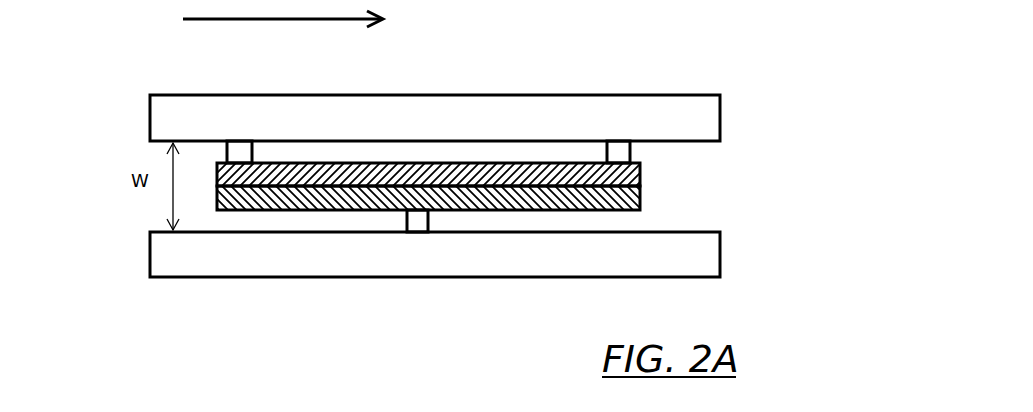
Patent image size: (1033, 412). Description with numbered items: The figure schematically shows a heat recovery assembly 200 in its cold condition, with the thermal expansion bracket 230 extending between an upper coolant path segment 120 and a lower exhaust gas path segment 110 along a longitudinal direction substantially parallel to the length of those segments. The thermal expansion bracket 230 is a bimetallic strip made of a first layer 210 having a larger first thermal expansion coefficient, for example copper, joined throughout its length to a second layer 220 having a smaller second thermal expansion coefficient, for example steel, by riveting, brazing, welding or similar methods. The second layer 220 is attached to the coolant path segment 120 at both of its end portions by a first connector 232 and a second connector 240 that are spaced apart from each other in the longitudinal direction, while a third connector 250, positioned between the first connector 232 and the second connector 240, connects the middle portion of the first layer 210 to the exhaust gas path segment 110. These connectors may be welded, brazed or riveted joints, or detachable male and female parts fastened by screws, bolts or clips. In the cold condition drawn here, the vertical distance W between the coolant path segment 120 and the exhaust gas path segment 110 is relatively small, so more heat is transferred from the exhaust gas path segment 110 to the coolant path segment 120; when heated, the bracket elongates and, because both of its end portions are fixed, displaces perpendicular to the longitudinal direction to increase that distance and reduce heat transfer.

The exhaust gas path segment 110 is at (370, 253).
The coolant path segment 120 is at (440, 120).
The heat recovery assembly 200 is at (792, 191).
The first layer 210 is at (640, 200).
The second layer 220 is at (640, 172).
The thermal expansion bracket 230 is at (213, 176).
The first connector 232 is at (243, 150).
The second connector 240 is at (618, 152).
The third connector 250 is at (417, 219).